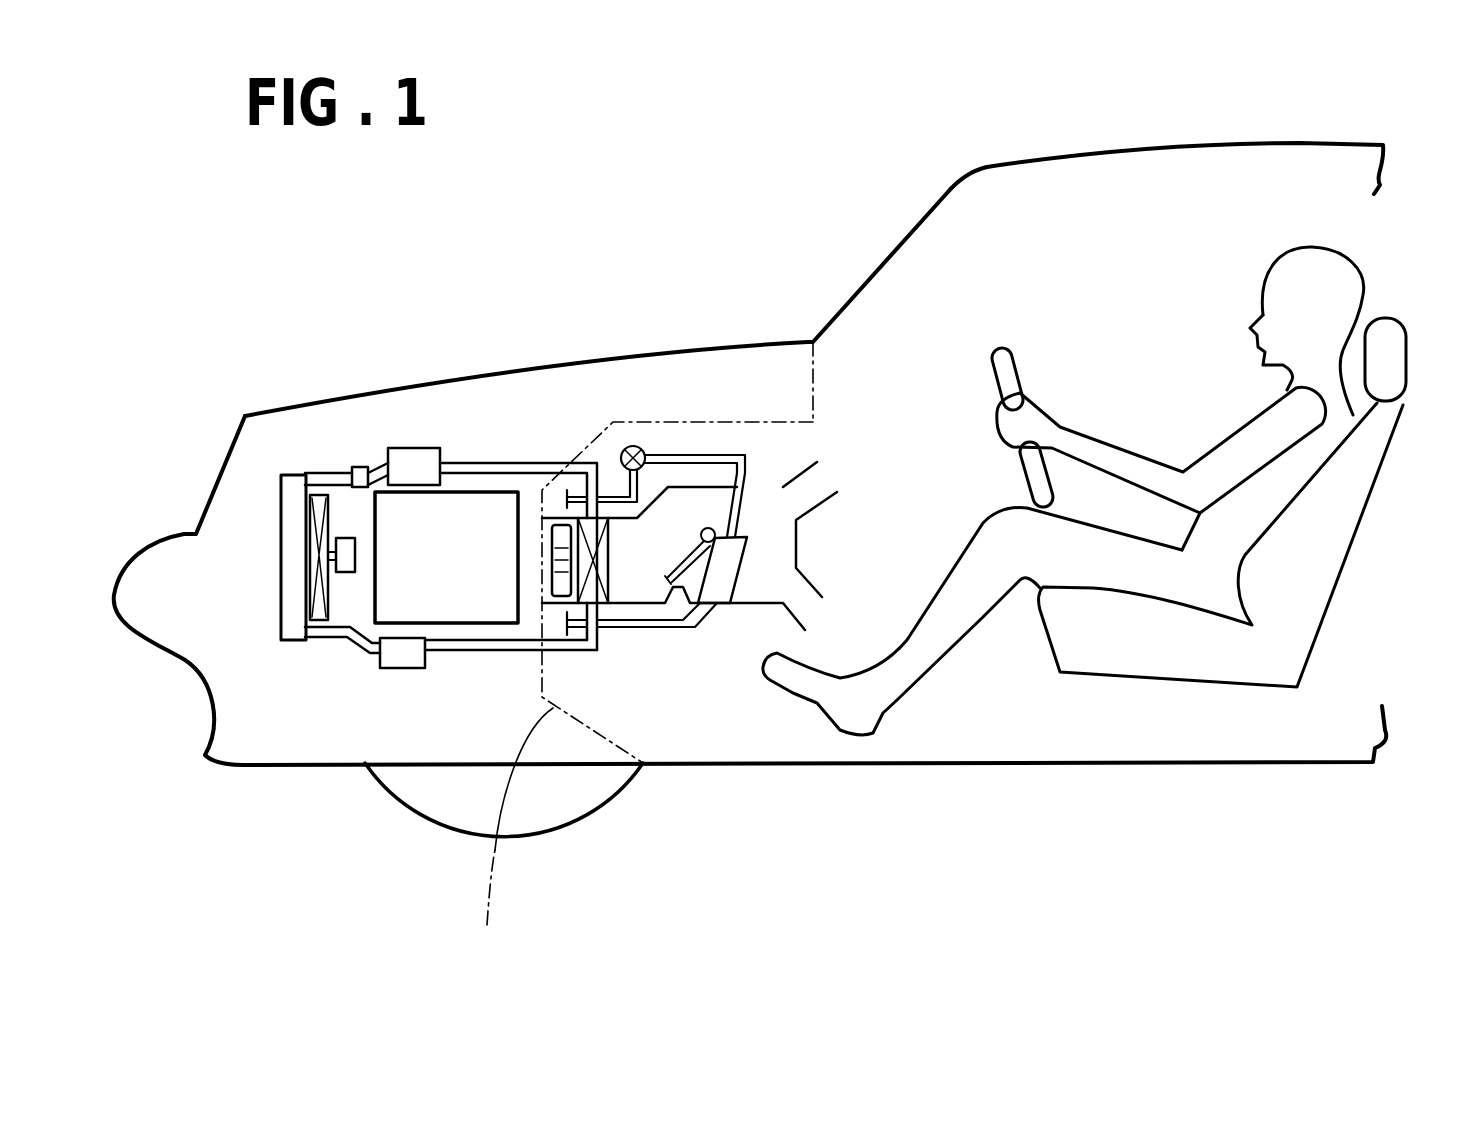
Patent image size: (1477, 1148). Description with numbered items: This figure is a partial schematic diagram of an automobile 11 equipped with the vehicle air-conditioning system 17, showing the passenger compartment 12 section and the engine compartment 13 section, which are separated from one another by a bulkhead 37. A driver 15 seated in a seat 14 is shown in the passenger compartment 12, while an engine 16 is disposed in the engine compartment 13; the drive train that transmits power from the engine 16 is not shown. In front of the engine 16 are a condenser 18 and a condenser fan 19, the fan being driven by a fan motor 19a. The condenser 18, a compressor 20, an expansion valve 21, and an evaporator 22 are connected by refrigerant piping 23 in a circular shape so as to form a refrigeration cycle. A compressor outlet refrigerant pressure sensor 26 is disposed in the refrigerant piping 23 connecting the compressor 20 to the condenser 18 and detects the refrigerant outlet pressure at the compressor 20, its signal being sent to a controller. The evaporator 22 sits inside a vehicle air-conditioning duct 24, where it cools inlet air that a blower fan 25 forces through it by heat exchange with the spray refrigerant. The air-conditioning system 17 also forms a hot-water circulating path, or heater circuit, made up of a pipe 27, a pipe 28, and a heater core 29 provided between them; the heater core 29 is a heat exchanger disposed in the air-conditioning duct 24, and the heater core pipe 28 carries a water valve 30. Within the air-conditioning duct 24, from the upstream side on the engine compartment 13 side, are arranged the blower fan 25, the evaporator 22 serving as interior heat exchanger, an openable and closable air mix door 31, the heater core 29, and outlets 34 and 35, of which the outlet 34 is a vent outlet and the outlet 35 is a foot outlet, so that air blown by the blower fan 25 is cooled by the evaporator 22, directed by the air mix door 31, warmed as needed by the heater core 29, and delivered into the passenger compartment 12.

The automobile 11 is at (912, 202).
The passenger compartment 12 is at (1180, 208).
The engine compartment 13 is at (228, 513).
The seat 14 is at (1337, 510).
The driver 15 is at (1252, 428).
The engine 16 is at (458, 492).
The air-conditioning system 17 is at (530, 405).
The condenser 18 is at (288, 640).
The condenser fan 19 is at (330, 515).
The fan motor 19a is at (348, 575).
The compressor 20 is at (414, 448).
The expansion valve 21 is at (404, 668).
The evaporator 22 is at (610, 575).
The refrigerant piping 23 is at (318, 636).
The vehicle air-conditioning duct 24 is at (668, 483).
The blower fan 25 is at (557, 600).
The compressor outlet refrigerant pressure sensor 26 is at (358, 466).
The pipe 27 is at (685, 624).
The heater core pipe 28 is at (743, 455).
The heater core 29 is at (740, 602).
The water valve 30 is at (632, 445).
The air mix door 31 is at (710, 527).
The vent outlet 34 is at (813, 503).
The foot outlet 35 is at (803, 620).
The bulkhead 37 is at (509, 838).